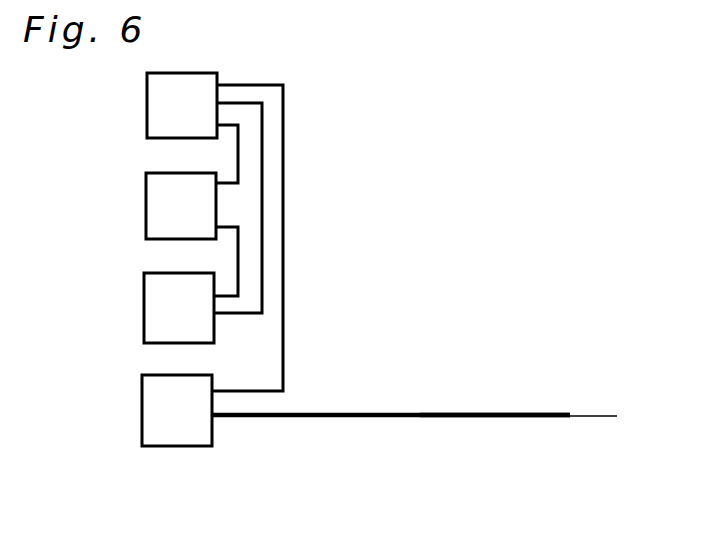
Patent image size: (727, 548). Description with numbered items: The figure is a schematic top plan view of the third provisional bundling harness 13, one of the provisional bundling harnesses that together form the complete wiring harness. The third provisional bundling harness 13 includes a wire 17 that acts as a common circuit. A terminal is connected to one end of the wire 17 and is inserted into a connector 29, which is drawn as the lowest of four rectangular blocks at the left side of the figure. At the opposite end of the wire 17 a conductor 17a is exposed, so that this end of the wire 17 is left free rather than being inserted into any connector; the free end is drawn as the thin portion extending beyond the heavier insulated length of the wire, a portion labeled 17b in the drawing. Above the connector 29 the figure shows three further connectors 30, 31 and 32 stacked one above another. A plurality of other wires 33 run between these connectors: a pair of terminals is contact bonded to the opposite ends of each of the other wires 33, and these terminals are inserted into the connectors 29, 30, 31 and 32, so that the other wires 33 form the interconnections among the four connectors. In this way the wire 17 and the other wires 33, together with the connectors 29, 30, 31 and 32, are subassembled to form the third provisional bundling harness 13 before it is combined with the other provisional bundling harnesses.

The third provisional bundling harness 13 is at (432, 287).
The wire 17 is at (533, 421).
The conductor 17a is at (600, 415).
The clad portion of optical fiber 17b is at (471, 413).
The connector 29 is at (142, 410).
The connector 30 is at (144, 312).
The connector 31 is at (146, 210).
The connector 32 is at (147, 107).
The other wires 33 is at (240, 247).